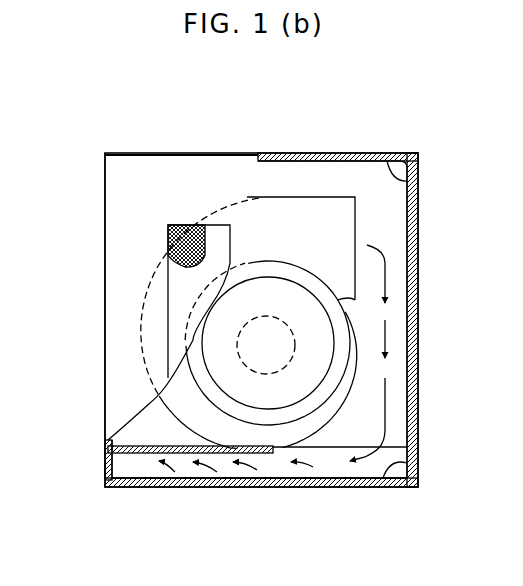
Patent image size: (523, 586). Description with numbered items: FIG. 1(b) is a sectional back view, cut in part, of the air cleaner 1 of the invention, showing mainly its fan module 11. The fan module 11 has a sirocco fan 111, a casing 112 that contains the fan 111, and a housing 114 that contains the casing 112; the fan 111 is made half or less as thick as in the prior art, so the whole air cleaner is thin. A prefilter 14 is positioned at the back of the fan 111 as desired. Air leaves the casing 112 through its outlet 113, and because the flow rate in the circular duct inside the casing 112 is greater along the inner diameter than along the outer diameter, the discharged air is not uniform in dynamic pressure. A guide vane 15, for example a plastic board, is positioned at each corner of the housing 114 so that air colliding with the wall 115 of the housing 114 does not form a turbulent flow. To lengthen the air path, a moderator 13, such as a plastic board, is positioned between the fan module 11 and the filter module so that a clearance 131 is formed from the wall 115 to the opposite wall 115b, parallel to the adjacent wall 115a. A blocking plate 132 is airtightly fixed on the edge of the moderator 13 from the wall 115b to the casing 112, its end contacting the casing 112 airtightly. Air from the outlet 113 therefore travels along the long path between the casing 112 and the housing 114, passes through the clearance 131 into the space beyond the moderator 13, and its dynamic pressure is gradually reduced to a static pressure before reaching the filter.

The air cleaner 1 is at (105, 153).
The fan module 11 is at (150, 153).
The moderator 13 is at (400, 287).
The prefilter 14 is at (168, 253).
The guide vane 15 is at (393, 159).
The sirocco fan 111 is at (252, 262).
The casing 112 is at (299, 197).
The outlet 113 is at (362, 196).
The housing 114 is at (198, 172).
The wall 115 is at (412, 222).
The wall 115a is at (218, 484).
The wall 115b is at (105, 462).
The clearance 131 is at (337, 465).
The blocking plate 132 is at (145, 455).